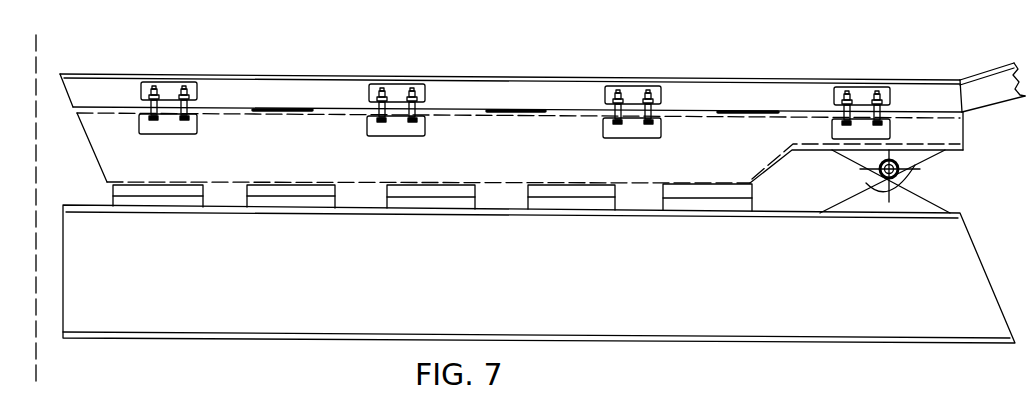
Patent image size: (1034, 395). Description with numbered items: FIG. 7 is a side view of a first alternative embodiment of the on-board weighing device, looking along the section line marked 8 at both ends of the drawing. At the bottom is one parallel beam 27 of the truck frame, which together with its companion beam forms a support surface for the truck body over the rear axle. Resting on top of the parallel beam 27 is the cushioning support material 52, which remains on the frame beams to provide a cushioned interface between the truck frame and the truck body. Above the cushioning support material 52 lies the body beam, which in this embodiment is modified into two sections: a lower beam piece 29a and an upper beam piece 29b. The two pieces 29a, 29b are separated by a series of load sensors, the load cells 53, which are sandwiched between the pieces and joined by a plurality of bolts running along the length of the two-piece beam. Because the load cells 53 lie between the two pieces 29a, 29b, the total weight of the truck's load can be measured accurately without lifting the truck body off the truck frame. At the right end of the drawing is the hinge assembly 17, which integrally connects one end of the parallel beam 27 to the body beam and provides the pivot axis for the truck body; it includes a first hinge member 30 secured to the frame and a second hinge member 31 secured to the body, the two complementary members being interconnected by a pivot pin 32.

The section line 8- 8 is at (36, 35).
The hinge assembly 17 is at (913, 146).
The parallel beam 27 is at (510, 287).
The beam piece 29a is at (555, 158).
The beam piece 29b is at (482, 93).
The first hinge member 30 is at (922, 200).
The second hinge member 31 is at (918, 170).
The pivot pin 32 is at (866, 183).
The cushioning support material 52 is at (150, 197).
The load cell 53 is at (277, 105).